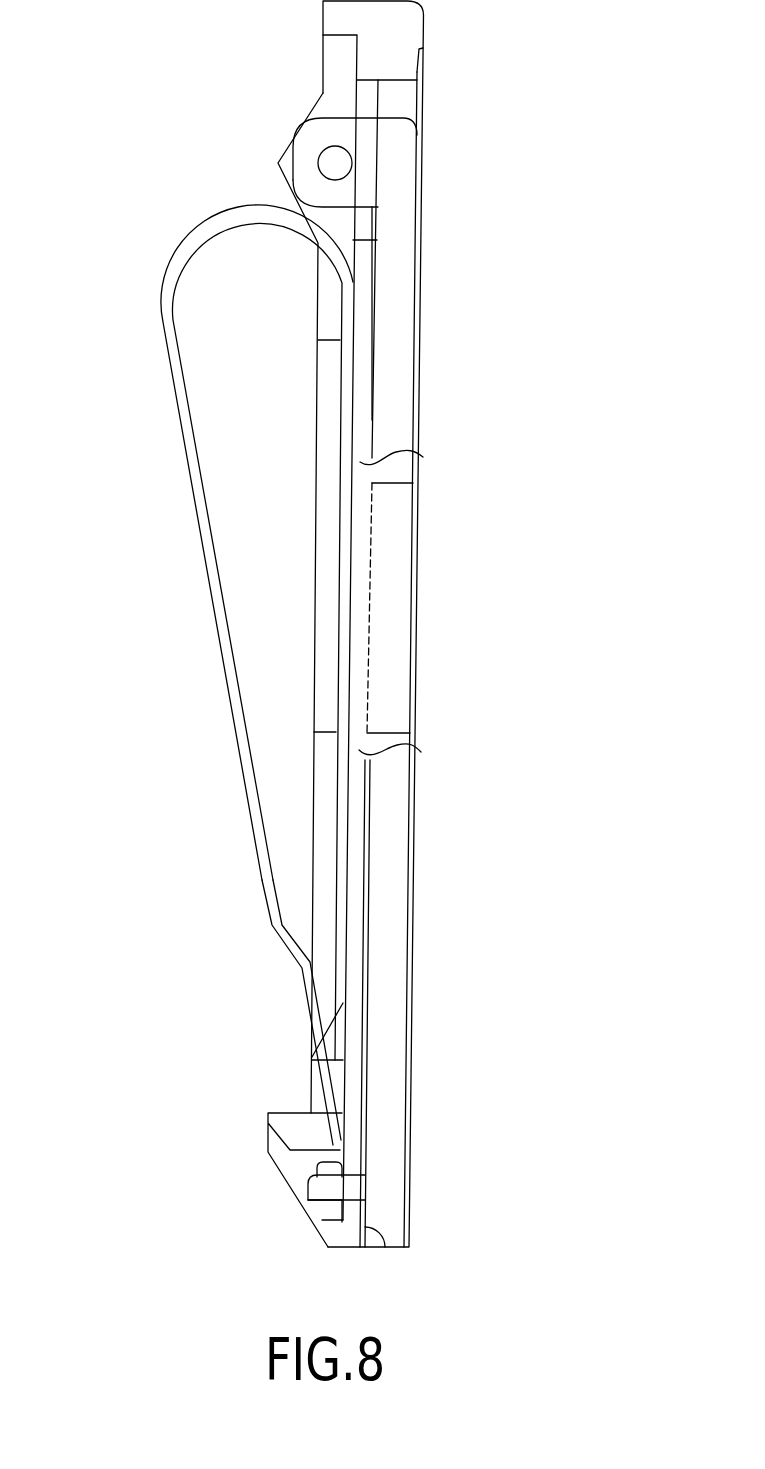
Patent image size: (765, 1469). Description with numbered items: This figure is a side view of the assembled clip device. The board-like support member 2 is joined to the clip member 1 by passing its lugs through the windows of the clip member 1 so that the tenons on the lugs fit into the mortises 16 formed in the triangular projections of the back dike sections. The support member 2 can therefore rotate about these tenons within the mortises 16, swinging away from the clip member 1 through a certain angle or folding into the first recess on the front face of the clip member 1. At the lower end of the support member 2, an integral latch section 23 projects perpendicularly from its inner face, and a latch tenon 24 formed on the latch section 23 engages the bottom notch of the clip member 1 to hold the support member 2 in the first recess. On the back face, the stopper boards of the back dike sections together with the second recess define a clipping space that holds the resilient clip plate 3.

The clip member 1 is at (394, 101).
The support member 2 is at (390, 844).
The resilient clip plate 3 is at (213, 558).
The mortise 16 is at (331, 165).
The latch section 23 is at (328, 1192).
The latch tenon 24 is at (322, 1165).